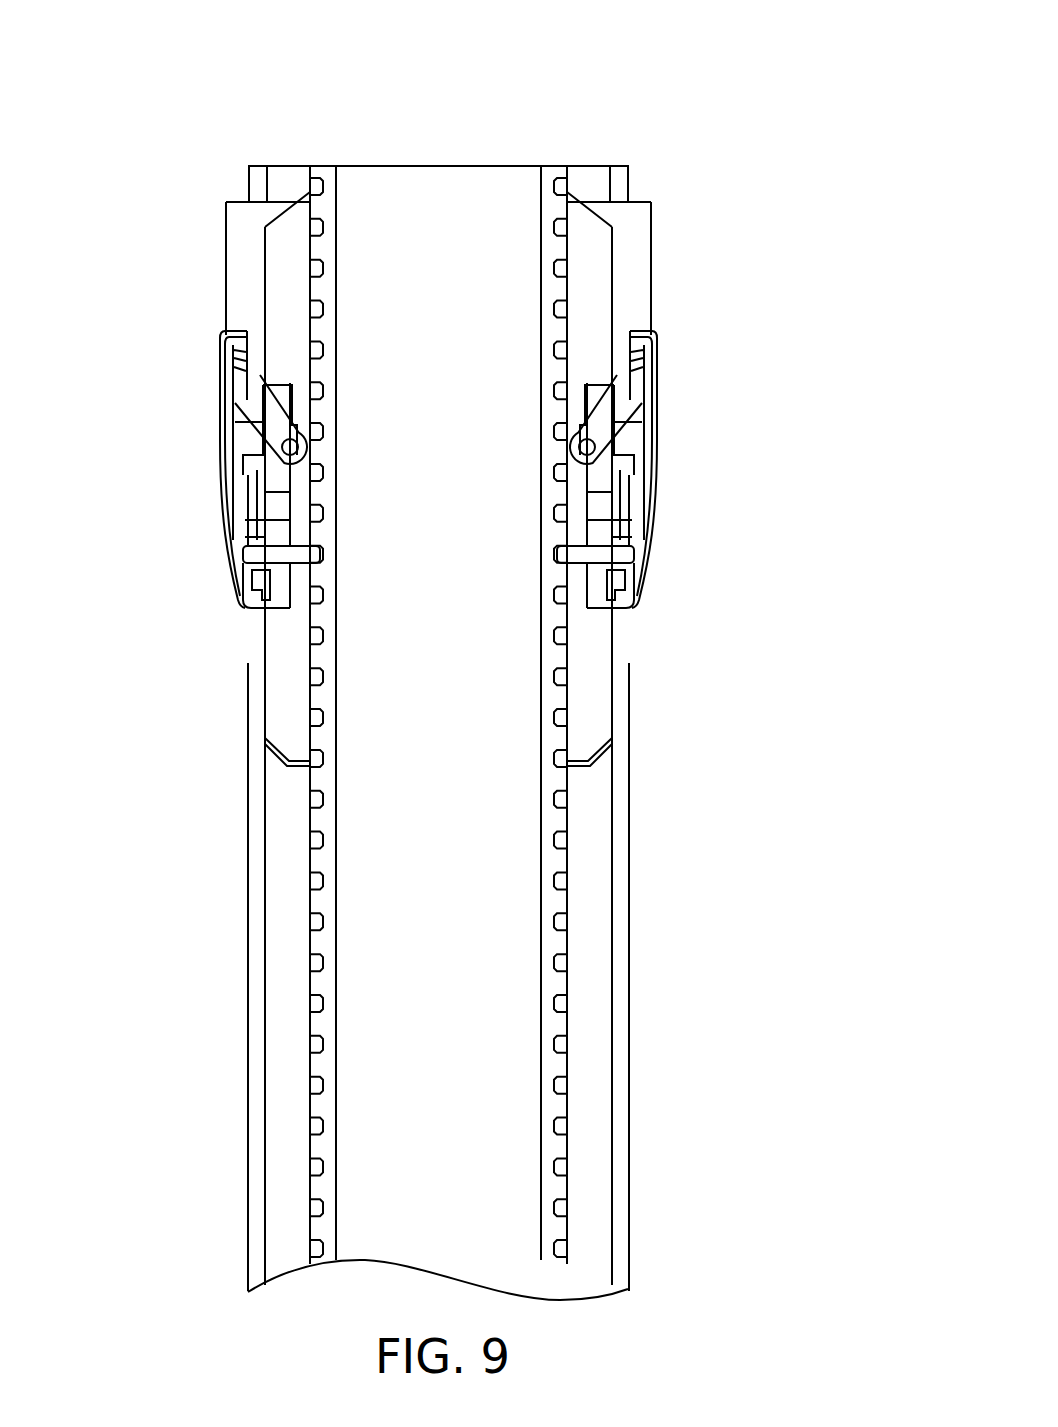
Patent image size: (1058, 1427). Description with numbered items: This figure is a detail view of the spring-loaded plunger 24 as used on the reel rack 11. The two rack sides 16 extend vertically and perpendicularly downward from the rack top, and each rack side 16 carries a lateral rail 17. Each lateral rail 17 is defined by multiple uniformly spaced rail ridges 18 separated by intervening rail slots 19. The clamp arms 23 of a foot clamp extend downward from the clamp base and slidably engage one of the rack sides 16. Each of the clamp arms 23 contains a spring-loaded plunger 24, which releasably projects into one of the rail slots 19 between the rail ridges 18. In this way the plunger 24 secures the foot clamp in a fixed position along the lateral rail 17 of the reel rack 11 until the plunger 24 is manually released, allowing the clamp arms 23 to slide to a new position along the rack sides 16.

The reel rack 11 is at (797, 95).
The rack sides 16 is at (170, 871).
The lateral rail 17 is at (317, 122).
The rail ridges 18 is at (567, 943).
The rail slots 19 is at (310, 965).
The clamp arms 23 is at (237, 276).
The spring-loaded plunger 24 is at (230, 476).